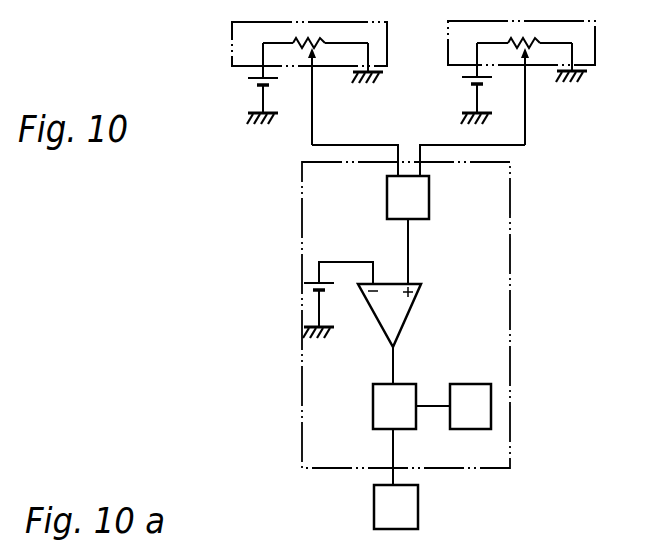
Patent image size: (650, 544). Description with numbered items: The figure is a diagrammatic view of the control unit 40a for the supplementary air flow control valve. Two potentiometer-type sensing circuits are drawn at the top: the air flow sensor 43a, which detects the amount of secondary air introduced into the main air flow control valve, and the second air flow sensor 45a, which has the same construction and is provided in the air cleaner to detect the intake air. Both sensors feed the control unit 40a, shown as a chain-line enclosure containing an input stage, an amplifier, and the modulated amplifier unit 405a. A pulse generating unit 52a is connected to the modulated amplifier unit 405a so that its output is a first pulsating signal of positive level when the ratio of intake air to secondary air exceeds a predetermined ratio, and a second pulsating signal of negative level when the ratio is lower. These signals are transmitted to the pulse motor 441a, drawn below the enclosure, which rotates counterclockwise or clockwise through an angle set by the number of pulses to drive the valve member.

The air flow sensor 43a is at (232, 48).
The second air flow sensor 45a is at (587, 65).
The control unit 40a is at (510, 272).
The modulated amplifier unit 405a is at (373, 408).
The pulse generating unit 52a is at (477, 390).
The pulse motor 441a is at (410, 510).